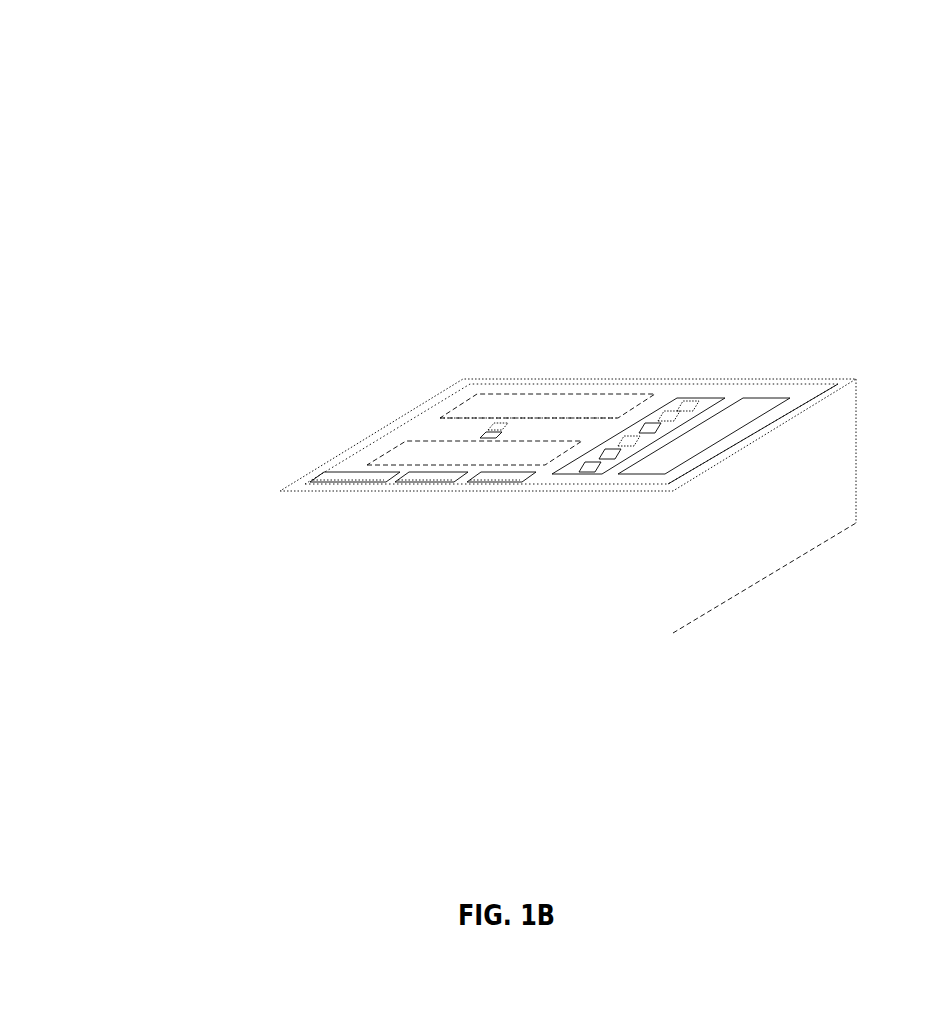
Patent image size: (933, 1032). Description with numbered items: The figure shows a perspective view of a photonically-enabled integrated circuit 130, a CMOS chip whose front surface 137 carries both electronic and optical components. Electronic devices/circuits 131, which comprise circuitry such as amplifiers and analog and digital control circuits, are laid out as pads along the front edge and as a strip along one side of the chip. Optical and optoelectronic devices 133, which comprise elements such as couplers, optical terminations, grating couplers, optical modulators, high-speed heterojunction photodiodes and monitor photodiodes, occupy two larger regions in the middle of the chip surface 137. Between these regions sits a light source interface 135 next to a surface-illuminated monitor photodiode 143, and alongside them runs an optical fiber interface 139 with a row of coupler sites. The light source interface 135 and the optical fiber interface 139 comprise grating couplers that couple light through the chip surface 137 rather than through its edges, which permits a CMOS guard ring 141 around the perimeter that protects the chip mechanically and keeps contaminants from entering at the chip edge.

The photonically-enabled integrated circuit 130 is at (120, 103).
The electronic devices/circuits 131 is at (497, 482).
The optical and optoelectronic devices 133 is at (543, 416).
The light source interface 135 is at (507, 424).
The chip front surface 137 is at (605, 389).
The optical fiber interface 139 is at (700, 397).
The CMOS guard ring 141 is at (840, 383).
The surface-illuminated monitor photodiode 143 is at (479, 435).